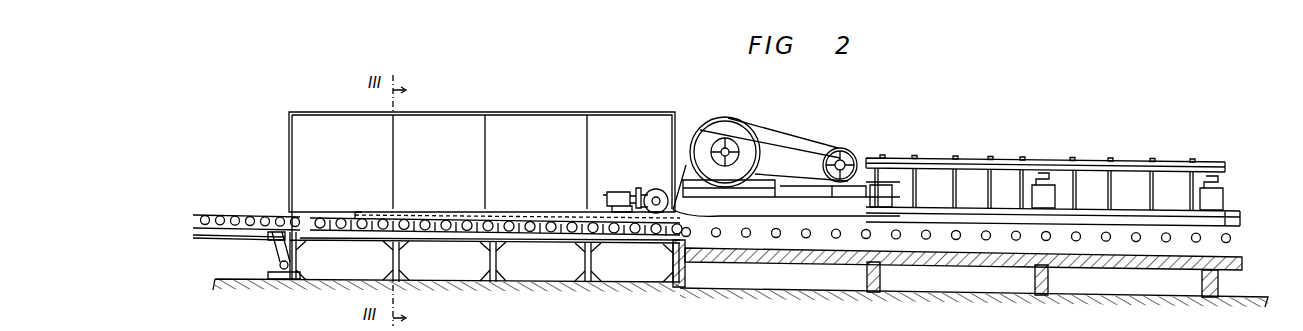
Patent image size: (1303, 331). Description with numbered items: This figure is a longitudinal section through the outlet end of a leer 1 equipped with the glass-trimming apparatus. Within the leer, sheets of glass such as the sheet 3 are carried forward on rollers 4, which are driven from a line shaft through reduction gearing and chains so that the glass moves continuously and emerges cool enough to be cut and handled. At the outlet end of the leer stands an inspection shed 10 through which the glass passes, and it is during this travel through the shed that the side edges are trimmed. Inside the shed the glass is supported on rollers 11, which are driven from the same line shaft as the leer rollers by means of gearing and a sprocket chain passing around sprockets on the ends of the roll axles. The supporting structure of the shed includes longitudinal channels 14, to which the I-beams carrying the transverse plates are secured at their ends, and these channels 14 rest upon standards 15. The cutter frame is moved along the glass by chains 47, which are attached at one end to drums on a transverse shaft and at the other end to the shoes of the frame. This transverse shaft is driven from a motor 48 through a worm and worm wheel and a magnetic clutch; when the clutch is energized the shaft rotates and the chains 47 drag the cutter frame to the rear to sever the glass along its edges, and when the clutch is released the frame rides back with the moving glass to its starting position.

The outlet end of the leer 1 is at (1090, 182).
The sheet of glass 3 is at (931, 229).
The rollers 4 is at (825, 240).
The inspection shed 10 is at (540, 117).
The rollers 11 is at (556, 235).
The channels 14 is at (340, 244).
The standards 15 is at (397, 259).
The chains 47 is at (423, 214).
The motor 48 is at (621, 192).